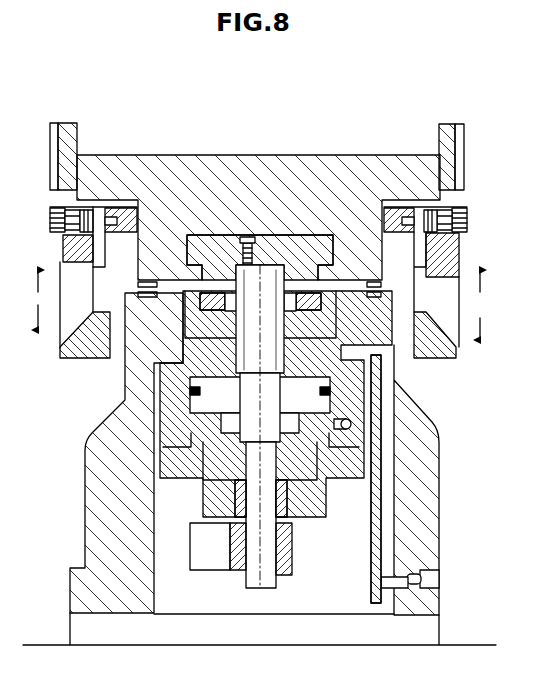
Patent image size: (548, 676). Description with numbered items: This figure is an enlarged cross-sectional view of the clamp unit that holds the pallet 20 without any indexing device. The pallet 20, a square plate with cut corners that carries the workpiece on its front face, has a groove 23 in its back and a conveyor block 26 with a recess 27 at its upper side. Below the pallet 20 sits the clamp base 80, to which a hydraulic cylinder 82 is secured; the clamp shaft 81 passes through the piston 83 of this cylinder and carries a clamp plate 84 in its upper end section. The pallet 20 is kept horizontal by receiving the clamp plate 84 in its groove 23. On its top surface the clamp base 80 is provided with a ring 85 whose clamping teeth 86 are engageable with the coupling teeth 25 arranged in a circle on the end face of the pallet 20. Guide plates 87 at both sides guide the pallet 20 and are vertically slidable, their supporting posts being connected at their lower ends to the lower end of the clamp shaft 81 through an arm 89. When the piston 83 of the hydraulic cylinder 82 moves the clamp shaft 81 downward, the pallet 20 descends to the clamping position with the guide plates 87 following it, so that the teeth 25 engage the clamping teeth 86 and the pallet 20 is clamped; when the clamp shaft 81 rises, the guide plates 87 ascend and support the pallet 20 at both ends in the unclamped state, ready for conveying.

The pallet 20 is at (276, 155).
The groove 23 is at (288, 233).
The coupling teeth 25 is at (145, 278).
The conveyor block 26 is at (446, 125).
The recess 27 is at (463, 125).
The clamp base 80 is at (95, 512).
The clamp shaft 81 is at (263, 475).
The hydraulic cylinder 82 is at (170, 430).
The piston 83 is at (198, 396).
The clamp plate 84 is at (250, 237).
The ring 85 is at (138, 318).
The clamping teeth 86 is at (138, 285).
The guide plates 87 is at (62, 246).
The arm 89 is at (207, 553).